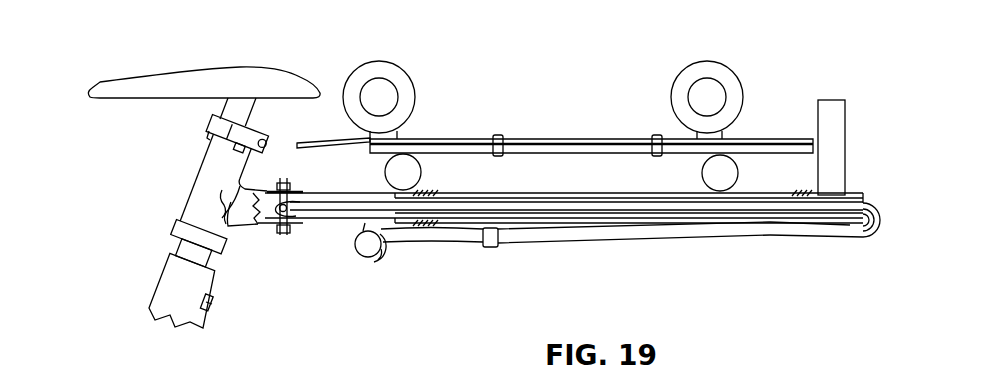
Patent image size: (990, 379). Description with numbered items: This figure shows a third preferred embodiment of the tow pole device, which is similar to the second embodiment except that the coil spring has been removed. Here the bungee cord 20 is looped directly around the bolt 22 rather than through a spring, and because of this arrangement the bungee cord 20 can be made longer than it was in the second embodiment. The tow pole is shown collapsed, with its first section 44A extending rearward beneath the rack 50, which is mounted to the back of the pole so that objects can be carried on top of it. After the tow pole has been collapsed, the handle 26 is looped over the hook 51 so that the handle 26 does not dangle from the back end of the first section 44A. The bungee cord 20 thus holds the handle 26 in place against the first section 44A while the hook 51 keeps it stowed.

The bungee cord 20 is at (877, 212).
The bolt 22 is at (297, 225).
The handle 26 is at (453, 242).
The rack 50 is at (618, 155).
The hook 51 is at (393, 255).
The first section 44A is at (855, 223).